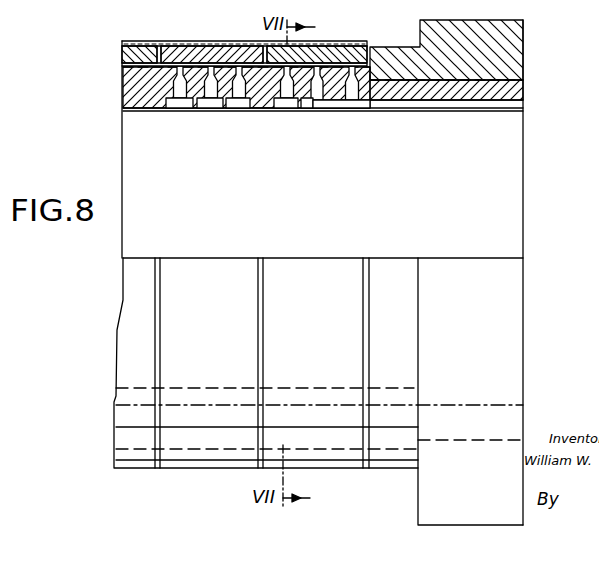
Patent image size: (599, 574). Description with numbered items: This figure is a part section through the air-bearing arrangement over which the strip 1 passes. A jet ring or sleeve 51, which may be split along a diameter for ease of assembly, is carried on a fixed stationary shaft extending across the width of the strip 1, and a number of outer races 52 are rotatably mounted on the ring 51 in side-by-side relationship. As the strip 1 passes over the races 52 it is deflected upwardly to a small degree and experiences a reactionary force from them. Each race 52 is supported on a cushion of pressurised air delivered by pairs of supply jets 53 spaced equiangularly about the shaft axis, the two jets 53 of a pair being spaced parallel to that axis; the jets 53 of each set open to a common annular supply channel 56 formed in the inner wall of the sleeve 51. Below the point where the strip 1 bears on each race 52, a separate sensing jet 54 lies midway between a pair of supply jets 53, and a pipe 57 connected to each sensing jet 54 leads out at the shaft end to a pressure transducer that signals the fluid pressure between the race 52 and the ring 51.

The strip 1 is at (177, 42).
The jet ring or sleeve 51 is at (132, 93).
The outer race 52 is at (208, 57).
The supply jet 53 is at (283, 71).
The sensing jet 54 is at (314, 98).
The annular supply channel 56 is at (182, 103).
The pipe 57 is at (516, 108).